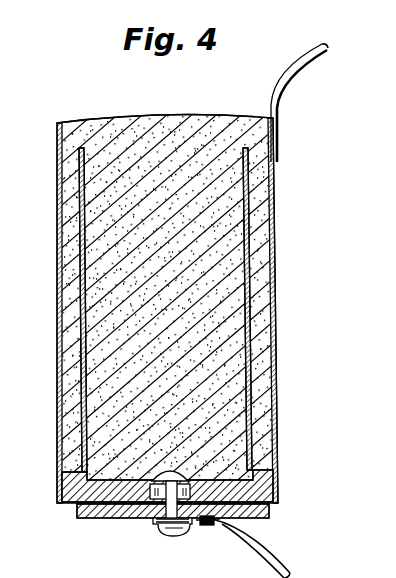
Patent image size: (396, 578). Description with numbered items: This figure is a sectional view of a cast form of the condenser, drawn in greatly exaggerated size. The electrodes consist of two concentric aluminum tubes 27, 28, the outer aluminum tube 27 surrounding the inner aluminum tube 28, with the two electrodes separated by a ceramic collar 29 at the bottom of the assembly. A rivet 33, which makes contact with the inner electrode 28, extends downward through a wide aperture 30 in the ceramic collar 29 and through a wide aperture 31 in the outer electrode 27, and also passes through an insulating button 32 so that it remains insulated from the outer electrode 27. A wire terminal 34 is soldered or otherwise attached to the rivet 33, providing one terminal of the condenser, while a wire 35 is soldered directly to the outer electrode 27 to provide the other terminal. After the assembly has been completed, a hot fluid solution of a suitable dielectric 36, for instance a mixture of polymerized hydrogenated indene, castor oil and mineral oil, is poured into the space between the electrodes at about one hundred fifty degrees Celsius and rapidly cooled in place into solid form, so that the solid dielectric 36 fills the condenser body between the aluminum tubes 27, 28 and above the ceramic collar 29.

The aluminum tube 27 is at (275, 182).
The aluminum tube 28 is at (248, 240).
The ceramic collar 29 is at (280, 476).
The aperture 30 is at (181, 480).
The aperture 31 is at (208, 526).
The insulating button 32 is at (265, 518).
The rivet 33 is at (163, 531).
The wire terminal 34 is at (291, 563).
The wire 35 is at (292, 78).
The dielectric 36 is at (100, 128).